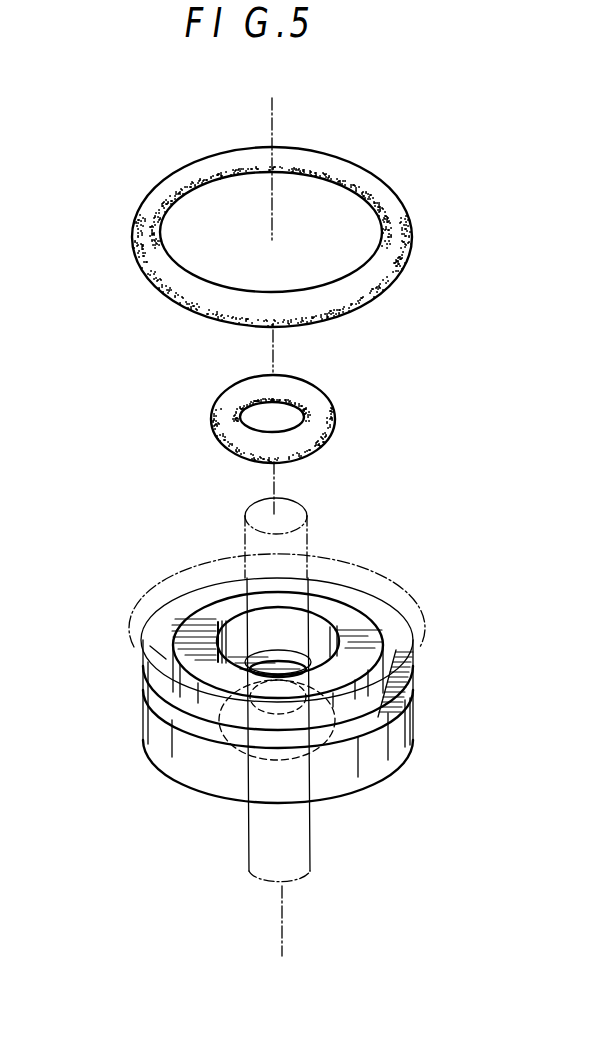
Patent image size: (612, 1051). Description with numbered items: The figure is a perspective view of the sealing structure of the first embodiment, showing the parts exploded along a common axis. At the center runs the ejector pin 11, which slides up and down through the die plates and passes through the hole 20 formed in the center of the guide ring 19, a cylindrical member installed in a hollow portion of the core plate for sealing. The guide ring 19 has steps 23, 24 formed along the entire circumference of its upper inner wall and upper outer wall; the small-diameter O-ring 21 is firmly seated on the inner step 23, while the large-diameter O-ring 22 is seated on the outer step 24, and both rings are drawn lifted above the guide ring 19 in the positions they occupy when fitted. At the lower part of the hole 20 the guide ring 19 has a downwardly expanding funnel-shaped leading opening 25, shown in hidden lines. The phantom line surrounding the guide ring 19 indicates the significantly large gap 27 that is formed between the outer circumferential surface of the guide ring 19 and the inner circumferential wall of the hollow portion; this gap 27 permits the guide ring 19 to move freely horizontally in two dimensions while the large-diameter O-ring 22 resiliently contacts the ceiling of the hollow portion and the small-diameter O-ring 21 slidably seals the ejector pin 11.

The ejector pin 11 is at (305, 540).
The guide ring 19 is at (421, 712).
The hole 20 is at (284, 646).
The small-diameter O-ring 21 is at (323, 403).
The large-diameter O-ring 22 is at (382, 183).
The step 23 is at (233, 640).
The step 24 is at (160, 652).
The funnel-shaped leading opening 25 is at (236, 728).
The gap 27 is at (394, 606).